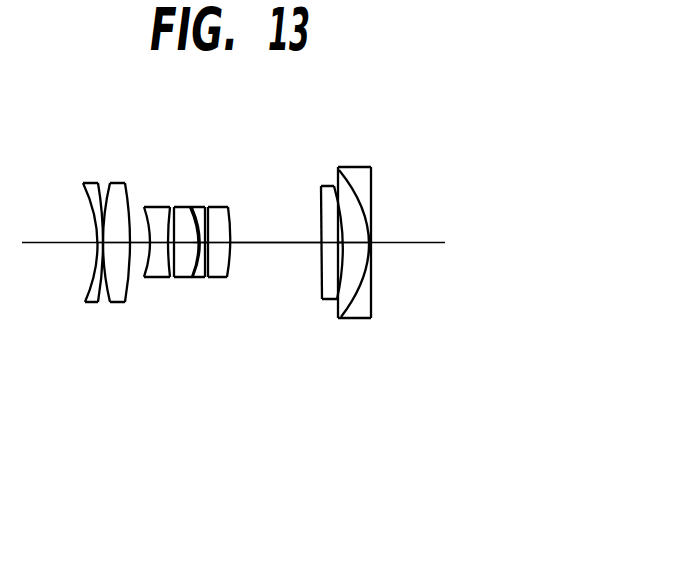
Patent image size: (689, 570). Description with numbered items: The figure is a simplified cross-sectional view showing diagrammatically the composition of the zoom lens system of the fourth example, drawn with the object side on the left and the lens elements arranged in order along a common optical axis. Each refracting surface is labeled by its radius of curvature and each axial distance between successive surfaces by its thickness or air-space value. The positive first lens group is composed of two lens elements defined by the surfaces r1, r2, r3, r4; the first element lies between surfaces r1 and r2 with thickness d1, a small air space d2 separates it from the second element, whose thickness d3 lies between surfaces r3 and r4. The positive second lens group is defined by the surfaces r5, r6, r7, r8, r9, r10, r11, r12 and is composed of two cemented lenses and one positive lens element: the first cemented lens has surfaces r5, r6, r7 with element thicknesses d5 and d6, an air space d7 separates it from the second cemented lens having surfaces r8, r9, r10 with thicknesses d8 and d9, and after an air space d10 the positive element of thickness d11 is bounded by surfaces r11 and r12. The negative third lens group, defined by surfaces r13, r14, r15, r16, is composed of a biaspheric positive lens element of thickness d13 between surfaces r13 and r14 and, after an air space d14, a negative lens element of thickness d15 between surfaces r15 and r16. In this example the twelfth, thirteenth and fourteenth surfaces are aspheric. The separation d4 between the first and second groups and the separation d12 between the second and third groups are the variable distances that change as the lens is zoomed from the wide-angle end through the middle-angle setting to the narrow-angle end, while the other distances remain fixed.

The first surface r1 is at (84, 184).
The second surface r2 is at (100, 182).
The third surface r3 is at (108, 182).
The fourth surface r4 is at (133, 243).
The fifth surface r5 is at (145, 207).
The sixth surface r6 is at (168, 207).
The seventh surface r7 is at (174, 207).
The eighth surface r8 is at (190, 207).
The ninth surface r9 is at (194, 207).
The tenth surface r10 is at (205, 207).
The eleventh surface r11 is at (209, 207).
The twelfth surface r12 is at (227, 207).
The thirteenth surface r13 is at (321, 187).
The fourteenth surface r14 is at (334, 186).
The fifteenth surface r15 is at (343, 190).
The sixteenth surface r16 is at (372, 178).
The first axial distance d1 is at (95, 244).
The second axial distance d2 is at (103, 244).
The third axial distance d3 is at (119, 244).
The fourth axial distance d4 is at (133, 244).
The fifth axial distance d5 is at (153, 244).
The sixth axial distance d6 is at (171, 244).
The seventh axial distance d7 is at (183, 244).
The eighth axial distance d8 is at (192, 244).
The ninth axial distance d9 is at (200, 244).
The tenth axial distance d10 is at (207, 244).
The eleventh axial distance d11 is at (213, 244).
The twelfth axial distance d12 is at (288, 244).
The thirteenth axial distance d13 is at (327, 244).
The fourteenth axial distance d14 is at (340, 244).
The fifteenth axial distance d15 is at (371, 244).